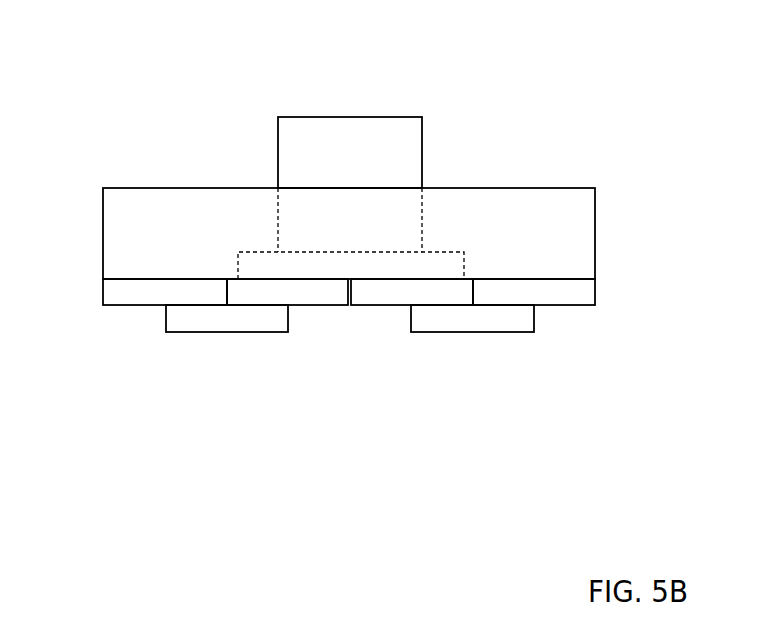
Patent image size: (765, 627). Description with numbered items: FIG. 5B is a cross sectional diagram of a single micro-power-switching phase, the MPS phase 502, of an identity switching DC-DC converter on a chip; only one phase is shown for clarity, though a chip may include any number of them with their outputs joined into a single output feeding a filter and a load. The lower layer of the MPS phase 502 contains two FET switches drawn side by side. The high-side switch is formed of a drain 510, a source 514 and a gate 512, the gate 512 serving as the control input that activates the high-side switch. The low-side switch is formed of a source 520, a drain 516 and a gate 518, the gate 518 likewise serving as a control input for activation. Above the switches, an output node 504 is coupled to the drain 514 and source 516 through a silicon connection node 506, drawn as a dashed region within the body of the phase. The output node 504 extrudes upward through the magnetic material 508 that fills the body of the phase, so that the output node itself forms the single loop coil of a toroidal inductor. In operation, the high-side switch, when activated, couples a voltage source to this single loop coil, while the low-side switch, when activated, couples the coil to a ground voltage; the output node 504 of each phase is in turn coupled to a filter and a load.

The MPS phase 502 is at (344, 513).
The output node 504 is at (315, 112).
The silicon connection node 506 is at (239, 248).
The magnetic material 508 is at (263, 184).
The drain 510 is at (137, 309).
The gate 512 is at (218, 336).
The source 514 is at (317, 308).
The drain 516 is at (363, 308).
The gate 518 is at (457, 336).
The source 520 is at (573, 308).